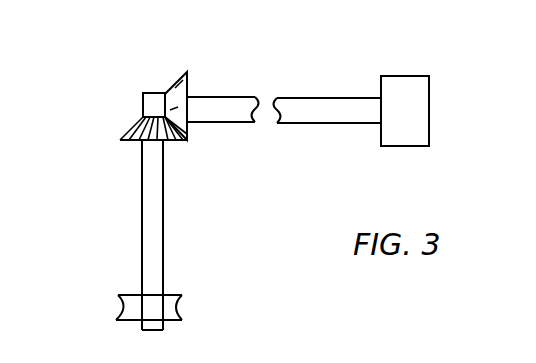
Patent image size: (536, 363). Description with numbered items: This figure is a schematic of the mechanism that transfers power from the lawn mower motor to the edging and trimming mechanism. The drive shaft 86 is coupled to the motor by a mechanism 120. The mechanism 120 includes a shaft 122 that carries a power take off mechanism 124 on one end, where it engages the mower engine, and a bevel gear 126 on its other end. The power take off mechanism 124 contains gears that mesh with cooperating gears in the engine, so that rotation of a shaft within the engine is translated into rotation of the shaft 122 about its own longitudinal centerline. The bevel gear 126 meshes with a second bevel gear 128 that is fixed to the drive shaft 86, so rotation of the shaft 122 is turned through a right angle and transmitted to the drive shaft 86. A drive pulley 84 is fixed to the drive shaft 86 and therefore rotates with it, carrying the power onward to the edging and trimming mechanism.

The drive pulley 84 is at (178, 295).
The drive shaft 86 is at (163, 218).
The mechanism 120 is at (254, 82).
The shaft 122 is at (305, 114).
The power take off mechanism 124 is at (411, 88).
The bevel gear 126 is at (181, 72).
The bevel gear 128 is at (129, 127).